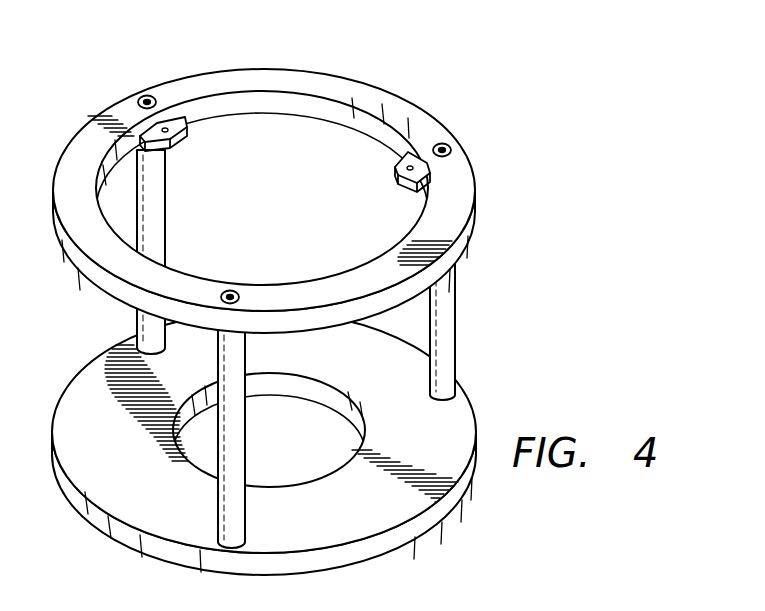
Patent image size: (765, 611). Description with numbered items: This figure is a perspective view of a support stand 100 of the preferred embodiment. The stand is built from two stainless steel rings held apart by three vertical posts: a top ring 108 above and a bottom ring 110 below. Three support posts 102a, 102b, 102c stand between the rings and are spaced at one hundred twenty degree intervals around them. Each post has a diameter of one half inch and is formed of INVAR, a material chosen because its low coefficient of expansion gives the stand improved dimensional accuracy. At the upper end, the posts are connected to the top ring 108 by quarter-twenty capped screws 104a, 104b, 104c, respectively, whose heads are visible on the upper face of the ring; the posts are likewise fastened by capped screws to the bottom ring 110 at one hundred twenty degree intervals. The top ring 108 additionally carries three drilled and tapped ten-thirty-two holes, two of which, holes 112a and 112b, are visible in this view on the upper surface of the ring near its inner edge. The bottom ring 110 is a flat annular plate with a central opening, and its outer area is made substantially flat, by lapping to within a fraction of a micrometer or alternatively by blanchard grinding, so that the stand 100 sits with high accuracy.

The support stand 100 is at (528, 150).
The support post 102a is at (457, 291).
The support post 102b is at (163, 190).
The support post 102c is at (248, 431).
The capped screw 104a is at (447, 144).
The capped screw 104b is at (140, 96).
The capped screw 104c is at (232, 289).
The top ring 108 is at (287, 79).
The bottom ring 110 is at (480, 420).
The drilled and tapped hole 112a is at (405, 155).
The drilled and tapped hole 112b is at (185, 118).